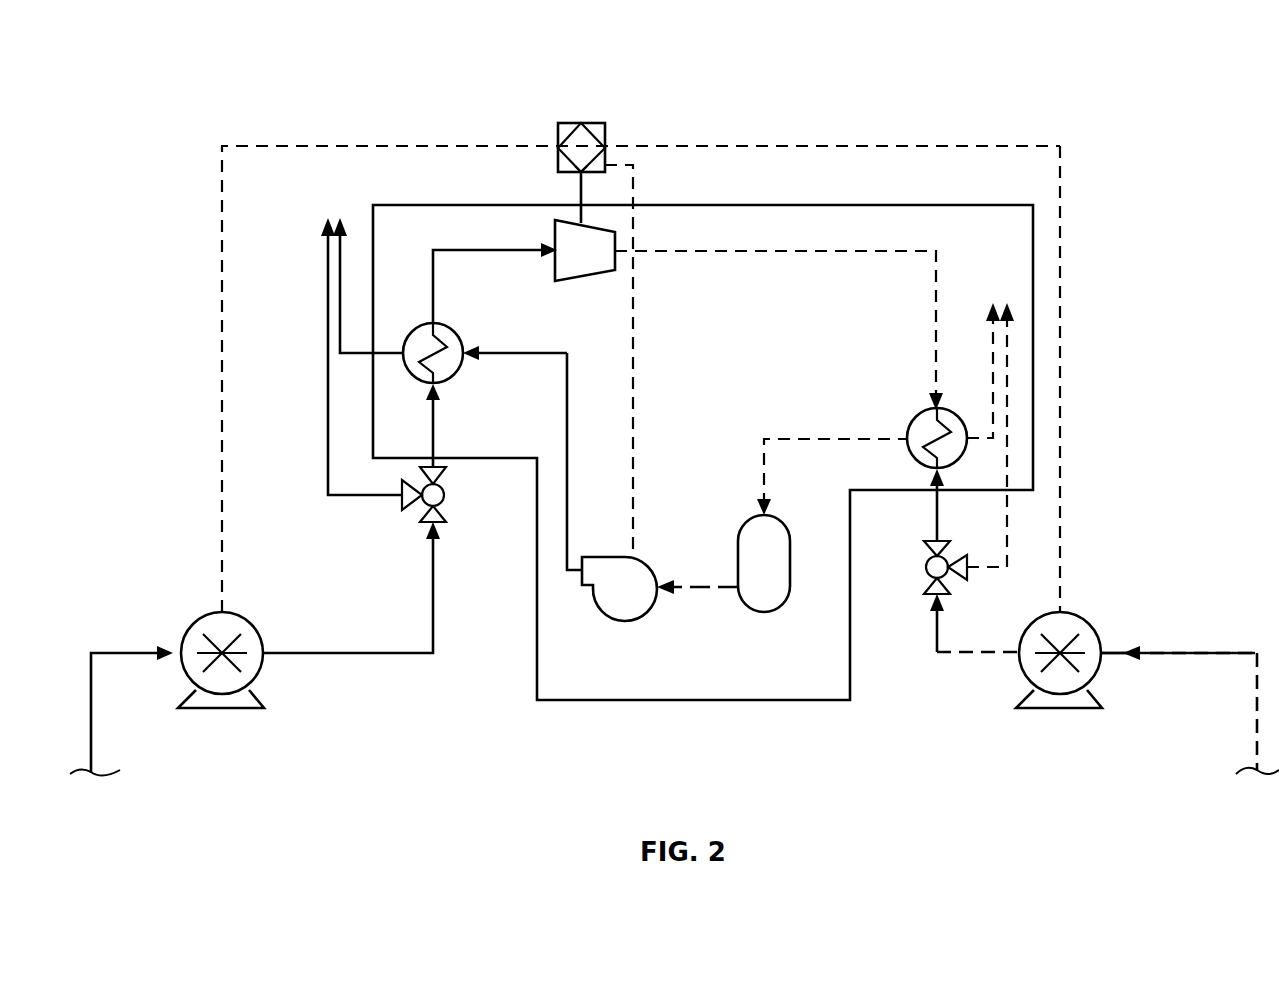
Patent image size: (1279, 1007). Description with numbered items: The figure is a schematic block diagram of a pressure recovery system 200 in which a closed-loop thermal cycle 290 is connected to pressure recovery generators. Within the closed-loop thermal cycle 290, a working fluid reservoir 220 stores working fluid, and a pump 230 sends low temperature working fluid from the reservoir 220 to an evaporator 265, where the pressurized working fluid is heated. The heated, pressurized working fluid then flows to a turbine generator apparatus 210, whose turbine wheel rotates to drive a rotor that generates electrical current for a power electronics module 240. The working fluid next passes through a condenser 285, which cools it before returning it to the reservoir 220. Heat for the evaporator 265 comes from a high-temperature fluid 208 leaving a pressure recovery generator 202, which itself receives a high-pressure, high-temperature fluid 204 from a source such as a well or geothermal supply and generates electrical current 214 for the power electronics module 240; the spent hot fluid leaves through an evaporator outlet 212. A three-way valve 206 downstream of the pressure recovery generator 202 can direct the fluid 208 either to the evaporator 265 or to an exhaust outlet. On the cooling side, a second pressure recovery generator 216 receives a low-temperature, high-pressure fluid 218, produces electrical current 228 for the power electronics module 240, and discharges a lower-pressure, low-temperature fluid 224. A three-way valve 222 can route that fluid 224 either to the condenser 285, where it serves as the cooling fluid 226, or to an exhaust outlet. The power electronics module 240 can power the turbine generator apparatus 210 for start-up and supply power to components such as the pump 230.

The pressure recovery system 200 is at (205, 60).
The pressure recovery generator 202 is at (250, 620).
The high-pressure, high-temperature fluid 204 is at (92, 740).
The three-way valve 206 is at (446, 498).
The high-temperature fluid 208 is at (392, 654).
The turbine generator apparatus 210 is at (583, 282).
The evaporator outlet 212 is at (341, 250).
The electrical current 214 is at (221, 481).
The second pressure recovery generator 216 is at (1079, 649).
The low-temperature, high-pressure fluid 218 is at (1257, 740).
The working fluid reservoir 220 is at (764, 613).
The three-way valve 222 is at (926, 567).
The lower-pressure, low-temperature fluid 224 is at (1168, 655).
The cooling fluid 226 is at (986, 330).
The electrical current 228 is at (1061, 370).
The pump 230 is at (636, 617).
The power electronics module 240 is at (590, 122).
The evaporator 265 is at (452, 374).
The condenser 285 is at (916, 419).
The closed-loop thermal cycle 290 is at (602, 700).